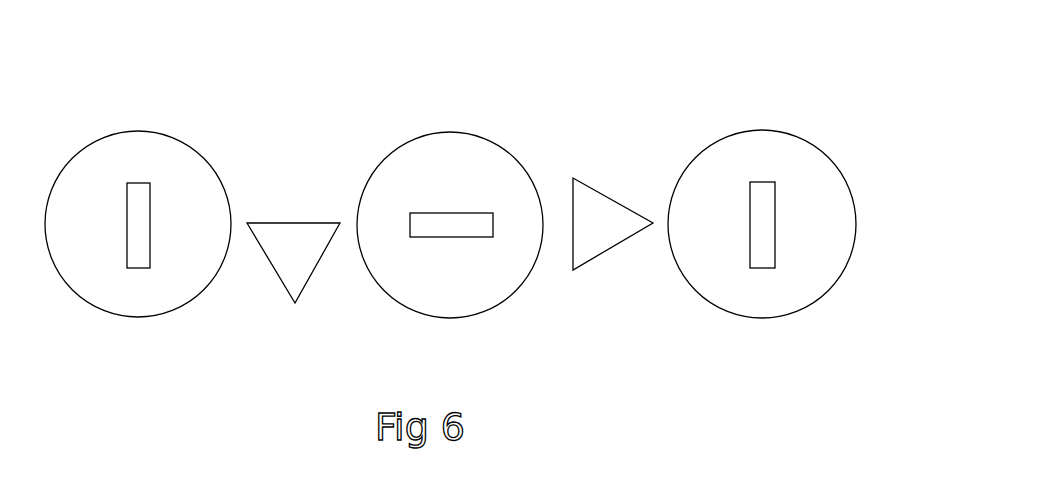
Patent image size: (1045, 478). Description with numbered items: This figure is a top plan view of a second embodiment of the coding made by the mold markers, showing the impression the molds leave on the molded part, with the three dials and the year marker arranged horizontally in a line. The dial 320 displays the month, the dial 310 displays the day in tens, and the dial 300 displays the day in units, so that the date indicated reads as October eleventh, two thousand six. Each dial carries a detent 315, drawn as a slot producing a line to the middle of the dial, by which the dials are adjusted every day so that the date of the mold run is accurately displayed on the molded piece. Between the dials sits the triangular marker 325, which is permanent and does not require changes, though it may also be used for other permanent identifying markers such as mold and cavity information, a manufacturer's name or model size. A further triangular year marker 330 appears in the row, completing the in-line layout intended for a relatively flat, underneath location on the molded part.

The dial 300 is at (478, 93).
The dial 310 is at (185, 160).
The detent 315 is at (853, 307).
The dial 320 is at (792, 96).
The triangular marker 325 is at (608, 218).
The triangle indicator 330 is at (298, 223).